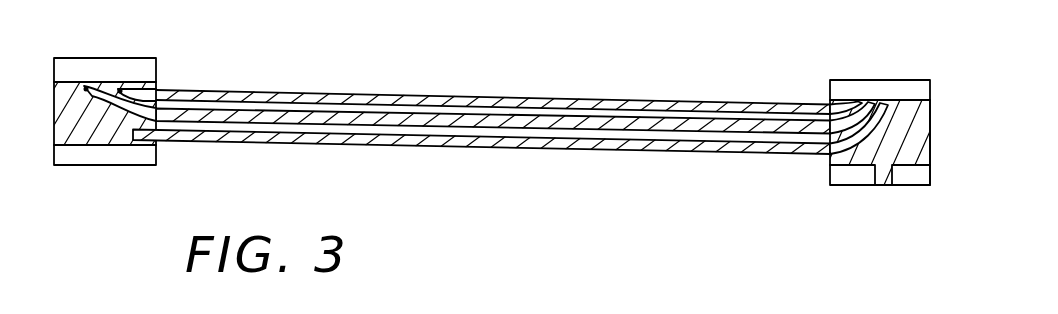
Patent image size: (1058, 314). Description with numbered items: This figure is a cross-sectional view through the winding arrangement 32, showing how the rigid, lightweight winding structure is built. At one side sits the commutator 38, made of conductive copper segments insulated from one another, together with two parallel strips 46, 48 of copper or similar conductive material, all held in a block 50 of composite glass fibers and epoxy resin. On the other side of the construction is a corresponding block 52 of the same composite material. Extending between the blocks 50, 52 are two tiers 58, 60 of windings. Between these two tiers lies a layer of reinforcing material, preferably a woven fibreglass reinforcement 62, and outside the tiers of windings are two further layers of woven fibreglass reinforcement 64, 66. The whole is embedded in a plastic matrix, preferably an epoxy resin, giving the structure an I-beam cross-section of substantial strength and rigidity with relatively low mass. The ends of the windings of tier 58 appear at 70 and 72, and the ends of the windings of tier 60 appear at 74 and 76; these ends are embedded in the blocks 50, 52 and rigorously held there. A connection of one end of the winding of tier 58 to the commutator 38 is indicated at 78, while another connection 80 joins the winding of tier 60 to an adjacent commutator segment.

The winding arrangement 32 is at (475, 87).
The commutator 38 is at (902, 86).
The parallel strip 46 is at (850, 170).
The parallel strip 48 is at (915, 178).
The block 50 is at (838, 153).
The block 52 is at (140, 147).
The tier of windings 58 is at (287, 104).
The tier of windings 60 is at (412, 133).
The woven layer of fibreglass reinforcement 62 is at (608, 131).
The layer of fibreglass reinforcement 64 is at (606, 101).
The layer of fibreglass reinforcement 66 is at (526, 143).
The end of winding 70 is at (121, 91).
The end of winding 72 is at (845, 103).
The end of winding 74 is at (86, 89).
The end of winding 76 is at (877, 186).
The connection 78 is at (870, 100).
The connection 80 is at (925, 108).